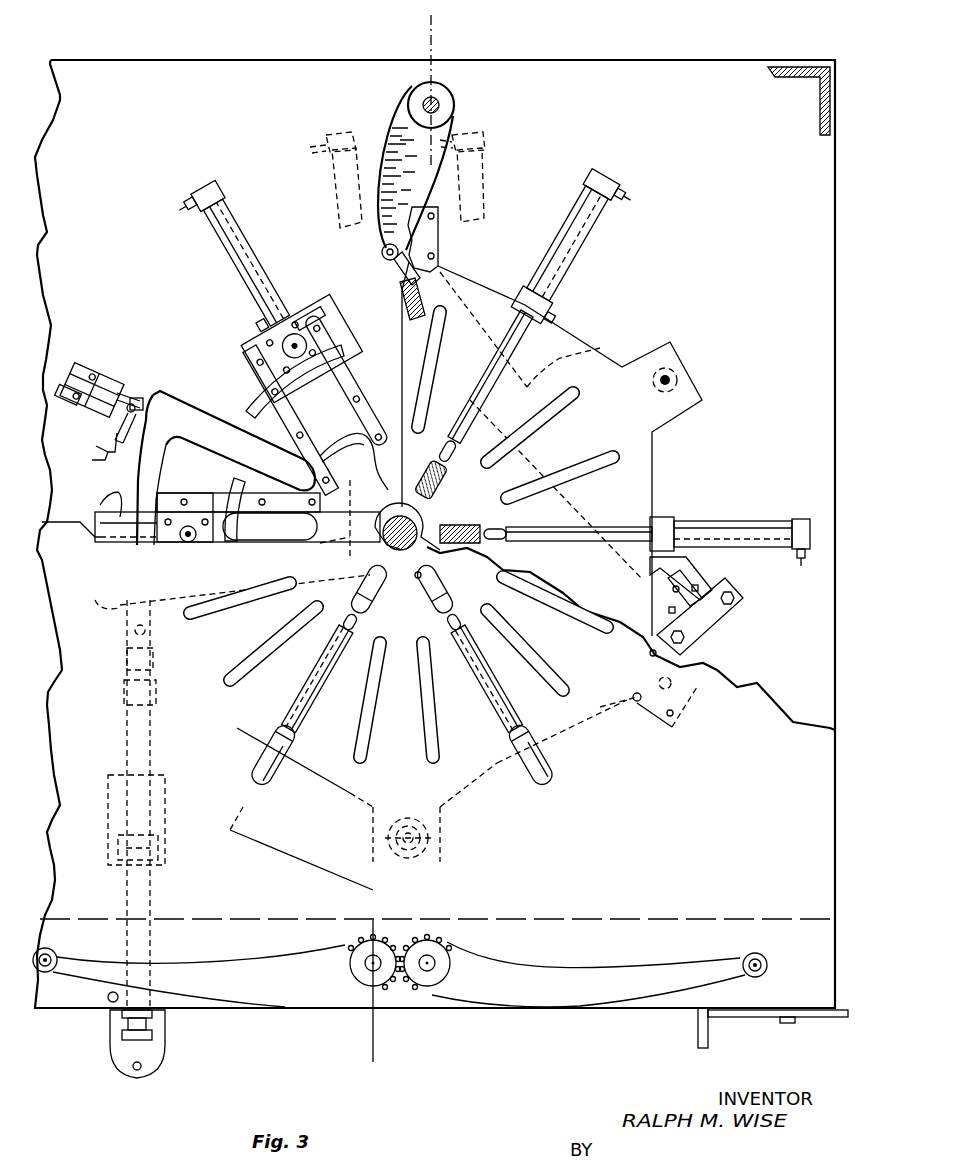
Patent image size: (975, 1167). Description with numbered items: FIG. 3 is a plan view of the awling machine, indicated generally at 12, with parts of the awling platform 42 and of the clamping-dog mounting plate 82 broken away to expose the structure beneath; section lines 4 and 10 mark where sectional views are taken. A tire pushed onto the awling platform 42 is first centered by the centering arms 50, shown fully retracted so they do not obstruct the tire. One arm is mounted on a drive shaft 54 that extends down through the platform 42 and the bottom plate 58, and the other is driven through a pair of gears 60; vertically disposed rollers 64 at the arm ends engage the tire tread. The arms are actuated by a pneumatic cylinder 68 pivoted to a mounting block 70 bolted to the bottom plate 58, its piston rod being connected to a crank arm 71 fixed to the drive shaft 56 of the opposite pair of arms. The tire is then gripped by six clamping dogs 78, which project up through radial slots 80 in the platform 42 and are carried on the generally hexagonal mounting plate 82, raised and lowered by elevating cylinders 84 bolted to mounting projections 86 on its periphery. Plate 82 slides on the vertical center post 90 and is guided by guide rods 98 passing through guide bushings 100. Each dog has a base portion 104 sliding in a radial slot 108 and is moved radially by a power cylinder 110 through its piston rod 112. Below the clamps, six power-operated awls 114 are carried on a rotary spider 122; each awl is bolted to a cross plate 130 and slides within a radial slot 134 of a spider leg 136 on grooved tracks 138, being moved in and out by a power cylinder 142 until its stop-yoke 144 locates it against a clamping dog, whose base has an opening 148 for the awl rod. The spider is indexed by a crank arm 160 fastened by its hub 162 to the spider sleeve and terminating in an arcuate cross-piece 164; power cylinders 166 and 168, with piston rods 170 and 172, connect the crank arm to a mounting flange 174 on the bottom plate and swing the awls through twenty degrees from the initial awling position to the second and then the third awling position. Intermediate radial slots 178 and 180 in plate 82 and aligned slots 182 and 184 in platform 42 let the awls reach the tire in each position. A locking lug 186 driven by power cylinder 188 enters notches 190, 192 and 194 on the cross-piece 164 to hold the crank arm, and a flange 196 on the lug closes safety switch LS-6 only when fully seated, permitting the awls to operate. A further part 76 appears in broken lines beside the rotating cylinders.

The section line 4- 4 is at (440, 27).
The section line 10- 10 is at (37, 916).
The machine assembly 12 is at (632, 52).
The awling platform 42 is at (734, 802).
The centering arms 50 is at (262, 965).
The drive shaft 54 is at (365, 965).
The drive shaft 56 is at (440, 100).
The bottom plate 58 is at (752, 200).
The pair of gears 60 is at (416, 938).
The rollers 64 is at (58, 954).
The pneumatic cylinder 68 is at (400, 315).
The mounting block 70 is at (705, 633).
The crank arm 71 is at (395, 120).
The actuator cylinder 76 is at (112, 808).
The clamping dogs 78 is at (440, 497).
The radial slots 80 is at (285, 745).
The mounting plate 82 is at (622, 430).
The elevating cylinders 84 is at (420, 210).
The mounting projections 86 is at (438, 238).
The center post 90 is at (383, 527).
The guide rods 98 is at (672, 382).
The guide bushings 100 is at (680, 368).
The base portion 104 is at (447, 443).
The radial slot 108 is at (508, 337).
The power cylinders 110 is at (578, 240).
The piston rods 112 is at (478, 393).
The awls 114 is at (300, 340).
The rotary spider 122 is at (292, 447).
The cross plate 130 is at (262, 330).
The radial slot 134 is at (340, 483).
The legs 136 is at (372, 395).
The grooved tracks 138 is at (293, 417).
The power cylinders 142 is at (233, 245).
The stop-yoke 144 is at (260, 402).
The opening 148 is at (447, 470).
The crank arm 160 is at (146, 407).
The hub 162 is at (416, 580).
The arcuate cross-piece 164 is at (104, 503).
The power cylinder 166 is at (127, 730).
The power cylinder 168 is at (145, 895).
The piston rod 170 is at (155, 663).
The piston rod 172 is at (125, 1025).
The mounting flange 174 is at (162, 1050).
The radial slots 178 is at (537, 400).
The radial slots 180 is at (445, 360).
The slots 182 is at (572, 606).
The slots 184 is at (530, 654).
The locking lug 186 is at (128, 392).
The power cylinder 188 is at (80, 368).
The notch 190 is at (143, 423).
The notch 192 is at (92, 538).
The notch 194 is at (98, 602).
The flange 196 is at (98, 432).
The safety switch LS-6 is at (82, 483).